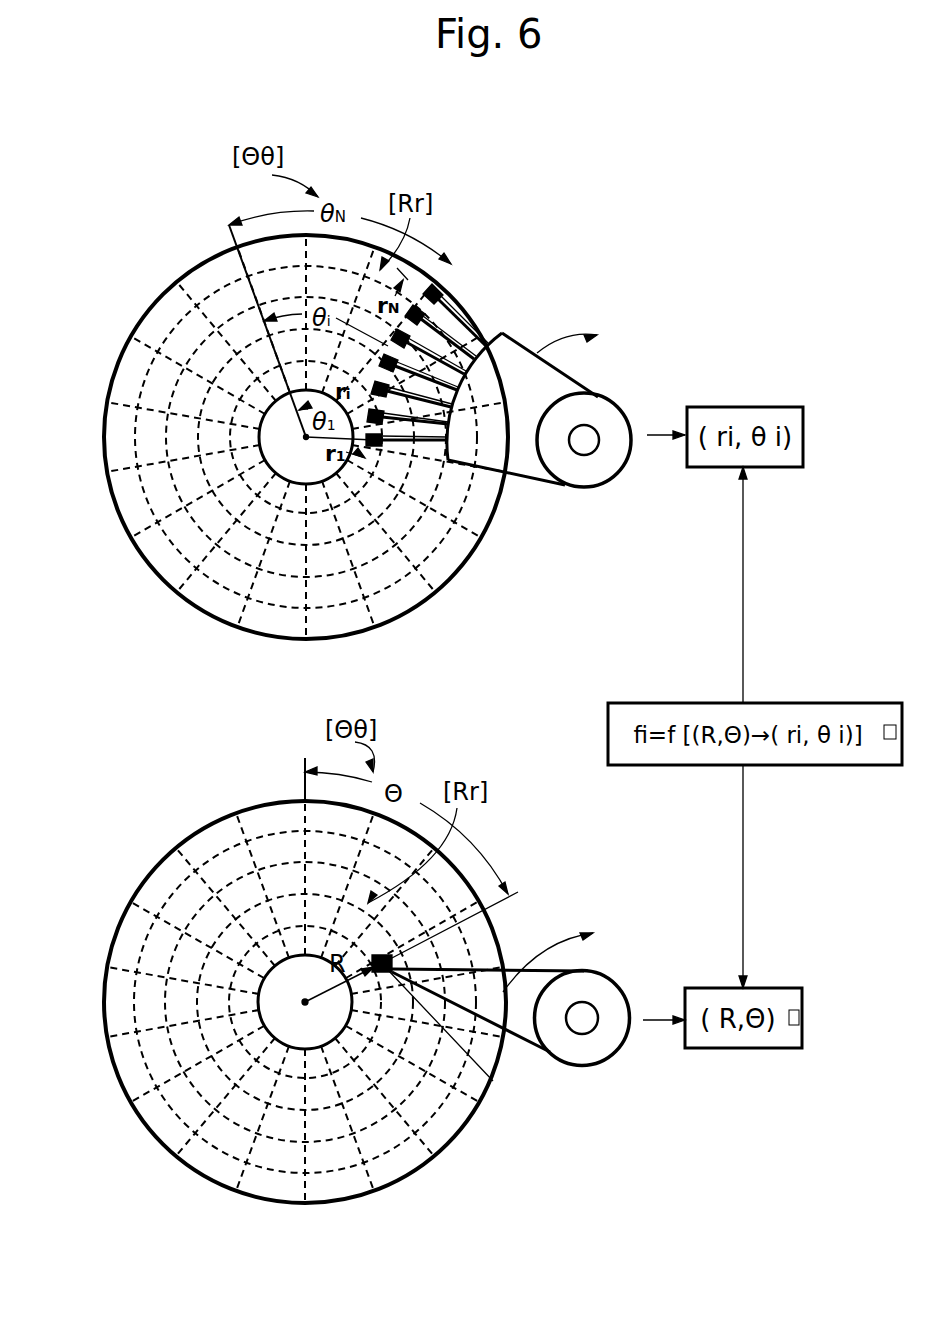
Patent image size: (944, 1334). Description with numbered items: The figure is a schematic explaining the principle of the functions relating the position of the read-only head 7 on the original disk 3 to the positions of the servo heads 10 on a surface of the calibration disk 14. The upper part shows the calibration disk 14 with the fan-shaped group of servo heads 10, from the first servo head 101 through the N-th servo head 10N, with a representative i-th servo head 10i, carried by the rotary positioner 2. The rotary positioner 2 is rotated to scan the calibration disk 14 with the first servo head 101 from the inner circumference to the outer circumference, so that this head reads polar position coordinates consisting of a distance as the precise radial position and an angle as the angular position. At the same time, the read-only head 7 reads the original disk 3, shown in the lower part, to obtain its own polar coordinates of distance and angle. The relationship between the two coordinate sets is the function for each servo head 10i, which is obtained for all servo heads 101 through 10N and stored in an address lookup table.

The calibration disk 14 is at (165, 318).
The servo head 10 is at (498, 383).
The N-th servo head 10N is at (447, 290).
The i-th servo head 10i is at (488, 325).
The first servo head 101 is at (396, 455).
The rotary positioner 2 is at (598, 415).
The original disk 3 is at (150, 890).
The read-only head 7 is at (490, 1080).